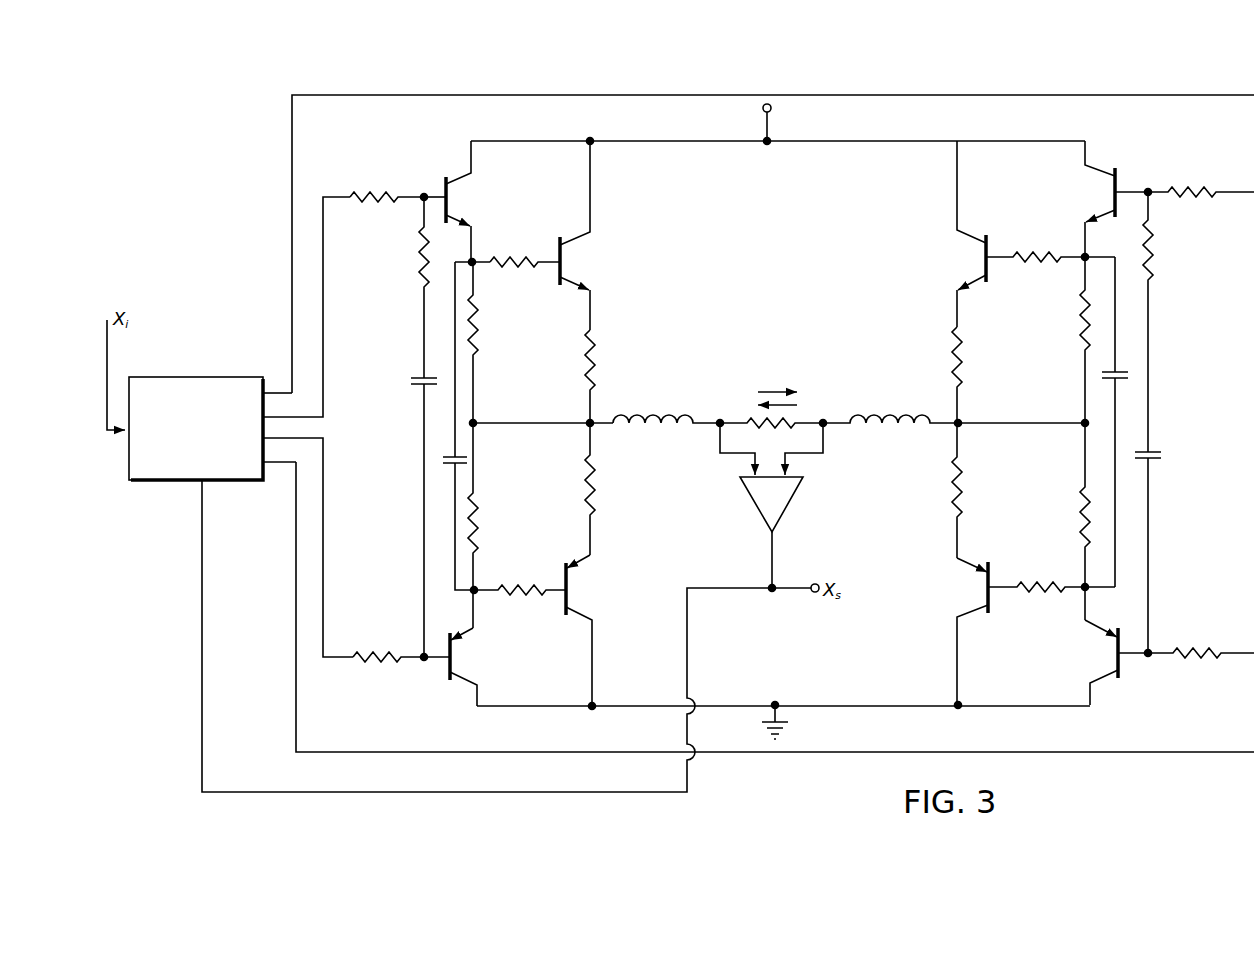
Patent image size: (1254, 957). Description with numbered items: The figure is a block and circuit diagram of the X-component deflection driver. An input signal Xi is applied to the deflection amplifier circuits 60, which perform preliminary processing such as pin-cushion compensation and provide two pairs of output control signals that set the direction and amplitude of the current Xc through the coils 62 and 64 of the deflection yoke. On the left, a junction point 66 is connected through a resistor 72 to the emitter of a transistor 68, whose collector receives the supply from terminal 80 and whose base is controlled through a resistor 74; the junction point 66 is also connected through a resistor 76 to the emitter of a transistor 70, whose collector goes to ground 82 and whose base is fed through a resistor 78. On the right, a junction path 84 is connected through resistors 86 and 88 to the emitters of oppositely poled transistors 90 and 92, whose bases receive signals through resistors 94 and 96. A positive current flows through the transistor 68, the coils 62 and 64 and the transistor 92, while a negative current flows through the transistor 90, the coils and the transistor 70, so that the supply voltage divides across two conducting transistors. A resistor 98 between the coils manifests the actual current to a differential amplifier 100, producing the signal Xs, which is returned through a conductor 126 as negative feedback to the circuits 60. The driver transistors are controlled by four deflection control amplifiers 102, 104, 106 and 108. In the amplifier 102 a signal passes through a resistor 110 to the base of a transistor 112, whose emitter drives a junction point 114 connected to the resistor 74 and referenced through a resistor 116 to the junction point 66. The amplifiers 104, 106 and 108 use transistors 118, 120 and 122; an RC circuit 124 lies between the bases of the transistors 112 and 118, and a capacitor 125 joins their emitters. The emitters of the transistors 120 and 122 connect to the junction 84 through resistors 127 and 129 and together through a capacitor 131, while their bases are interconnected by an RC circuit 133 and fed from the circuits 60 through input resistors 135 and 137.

The deflection amplifier circuits 60 is at (203, 376).
The coil 62 is at (655, 412).
The coil 64 is at (886, 434).
The junction point 66 is at (586, 421).
The transistor 68 is at (590, 266).
The transistor 70 is at (590, 597).
The resistor 72 is at (597, 350).
The resistor 74 is at (518, 258).
The resistor 76 is at (601, 500).
The resistor 78 is at (524, 586).
The terminal 80 is at (762, 110).
The ground 82 is at (786, 714).
The junction path 84 is at (964, 420).
The resistor 86 is at (964, 362).
The resistor 88 is at (964, 490).
The transistor 90 is at (968, 258).
The transistor 92 is at (977, 590).
The resistor 94 is at (1022, 255).
The resistor 96 is at (1032, 586).
The resistor 98 is at (782, 418).
The differential amplifier 100 is at (786, 513).
The deflection control amplifier 102 is at (438, 156).
The deflection control amplifier 104 is at (433, 638).
The deflection control amplifier 106 is at (1127, 161).
The deflection control amplifier 108 is at (1150, 684).
The resistor 110 is at (357, 208).
The transistor 112 is at (470, 203).
The junction point 114 is at (477, 268).
The resistor 116 is at (480, 341).
The transistor 118 is at (470, 667).
The transistor 120 is at (1110, 178).
The transistor 122 is at (1108, 652).
The RC circuit 124 is at (410, 357).
The capacitor 125 is at (448, 458).
The conductor 126 is at (325, 790).
The resistor 127 is at (1082, 316).
The resistor 129 is at (1092, 528).
The capacitor 131 is at (1125, 370).
The RC circuit 133 is at (1172, 428).
The input resistor 135 is at (1200, 196).
The input resistor 137 is at (1202, 650).